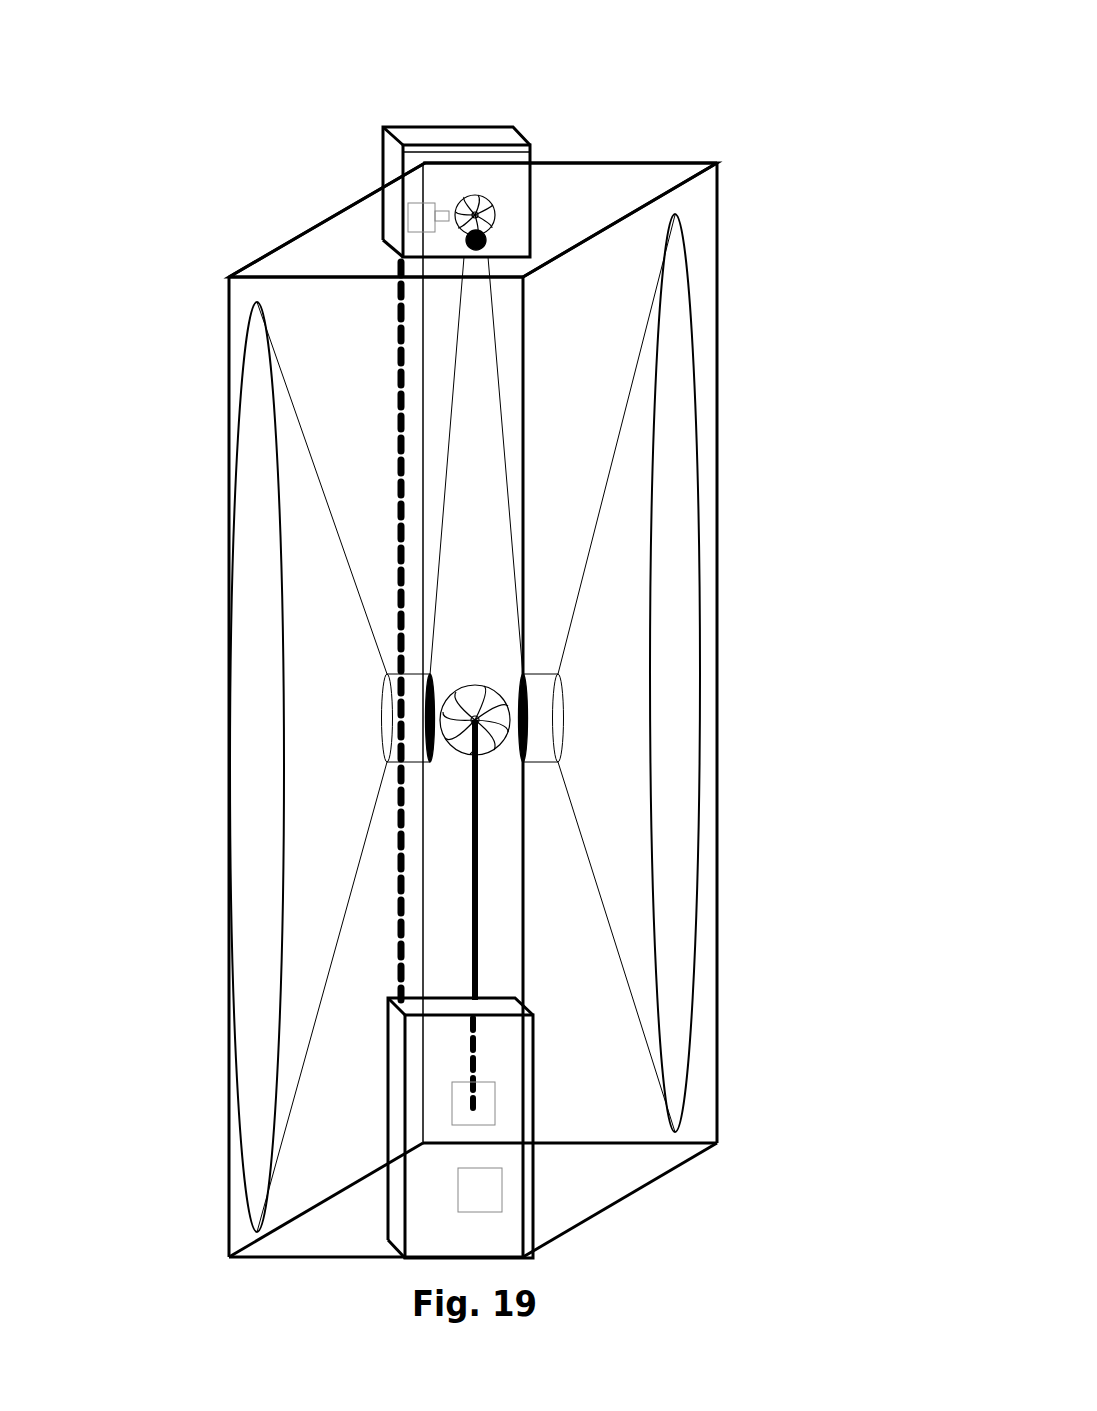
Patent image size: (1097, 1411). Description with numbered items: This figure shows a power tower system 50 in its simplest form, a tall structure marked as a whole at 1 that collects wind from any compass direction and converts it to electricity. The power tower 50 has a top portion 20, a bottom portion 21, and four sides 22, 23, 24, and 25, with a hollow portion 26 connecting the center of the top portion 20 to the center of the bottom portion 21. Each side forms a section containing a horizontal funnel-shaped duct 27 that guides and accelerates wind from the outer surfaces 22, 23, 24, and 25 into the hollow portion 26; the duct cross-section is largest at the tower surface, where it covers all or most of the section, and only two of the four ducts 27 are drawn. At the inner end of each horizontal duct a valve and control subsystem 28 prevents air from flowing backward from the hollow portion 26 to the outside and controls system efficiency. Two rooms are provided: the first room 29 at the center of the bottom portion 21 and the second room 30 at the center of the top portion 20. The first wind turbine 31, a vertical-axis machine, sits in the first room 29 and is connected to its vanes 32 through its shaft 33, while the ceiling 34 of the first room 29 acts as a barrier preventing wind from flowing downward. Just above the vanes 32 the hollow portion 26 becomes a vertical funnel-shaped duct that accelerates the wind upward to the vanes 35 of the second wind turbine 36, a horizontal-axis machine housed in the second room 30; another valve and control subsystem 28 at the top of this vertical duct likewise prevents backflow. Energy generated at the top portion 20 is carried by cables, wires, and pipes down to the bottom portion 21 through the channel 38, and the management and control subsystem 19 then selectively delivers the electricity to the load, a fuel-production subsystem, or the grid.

The apparatus 1 is at (723, 283).
The management and control subsystem 19 is at (472, 1192).
The top portion 20 is at (324, 248).
The bottom portion 21 is at (580, 1199).
The side 22 is at (247, 292).
The side 23 is at (722, 188).
The side 24 is at (705, 158).
The side 25 is at (262, 255).
The hollow portion 26 is at (490, 396).
The horizontal funnel-shaped duct 27 is at (486, 152).
The valve and control subsystem 28 is at (491, 242).
The first room 29 is at (508, 1060).
The second room 30 is at (524, 175).
The first wind turbine 31 is at (456, 1089).
The vanes 32 is at (483, 728).
The shaft 33 is at (481, 853).
The ceiling 34 is at (491, 997).
The vanes 35 is at (506, 218).
The second wind turbine 36 is at (431, 209).
The channel 38 is at (393, 365).
The power tower system 50 is at (334, 191).